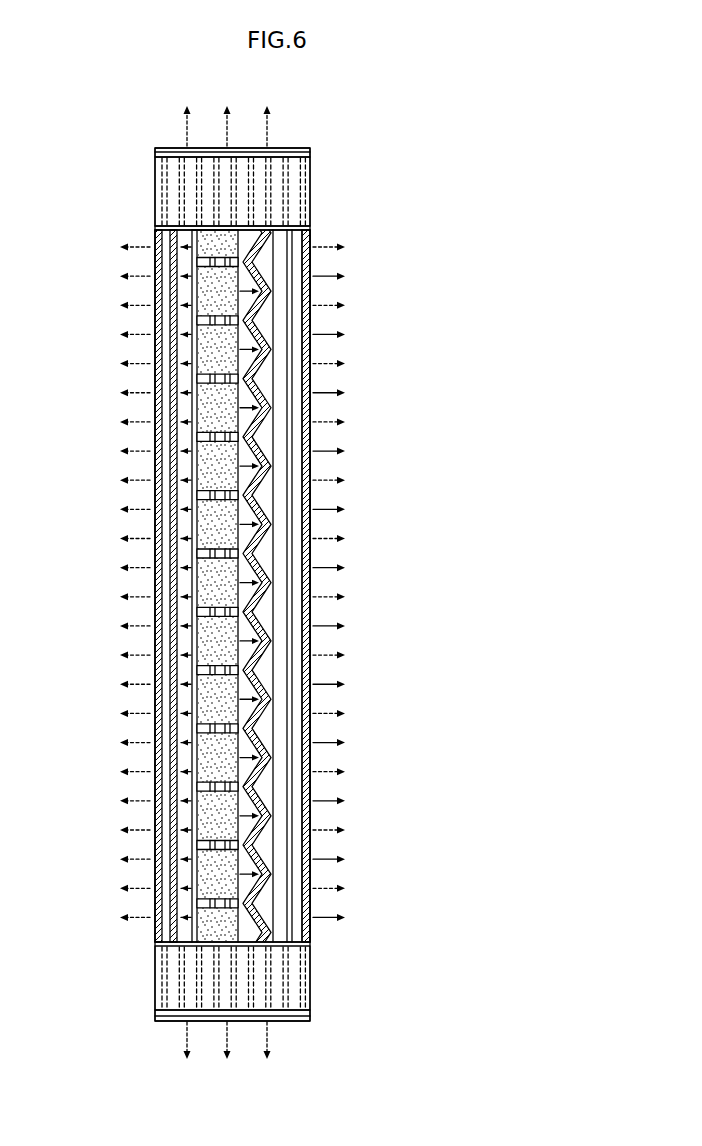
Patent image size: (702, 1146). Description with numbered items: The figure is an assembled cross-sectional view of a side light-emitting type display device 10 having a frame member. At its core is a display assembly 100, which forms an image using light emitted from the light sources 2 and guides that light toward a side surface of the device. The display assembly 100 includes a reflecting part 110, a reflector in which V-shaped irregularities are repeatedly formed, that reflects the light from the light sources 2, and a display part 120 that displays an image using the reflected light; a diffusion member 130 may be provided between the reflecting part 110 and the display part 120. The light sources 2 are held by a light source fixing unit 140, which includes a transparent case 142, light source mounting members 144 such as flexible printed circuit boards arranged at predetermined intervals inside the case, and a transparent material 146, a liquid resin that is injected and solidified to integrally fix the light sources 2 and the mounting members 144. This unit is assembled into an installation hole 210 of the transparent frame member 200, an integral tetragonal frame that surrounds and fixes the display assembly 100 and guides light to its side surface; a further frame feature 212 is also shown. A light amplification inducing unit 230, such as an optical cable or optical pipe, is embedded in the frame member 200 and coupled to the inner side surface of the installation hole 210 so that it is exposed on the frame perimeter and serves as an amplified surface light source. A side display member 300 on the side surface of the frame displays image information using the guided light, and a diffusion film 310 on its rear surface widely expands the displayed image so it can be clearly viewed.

The side light-emitting type display device 10 is at (494, 113).
The display assembly 100 is at (488, 290).
The reflecting part 110 is at (275, 376).
The display part 120 is at (306, 293).
The diffusion member 130 is at (290, 347).
The light source fixing unit 140 is at (430, 410).
The transparent case 142 is at (200, 412).
The light source mounting members 144 is at (205, 265).
The transparent material 146 is at (242, 522).
The transparent frame member 200 is at (155, 167).
The installation hole 210 is at (170, 238).
The inner frame member 212 is at (301, 245).
The light amplification inducing unit 230 is at (162, 981).
The side display member 300 is at (292, 147).
The diffusion film 310 is at (310, 154).
The light sources 2 is at (195, 327).